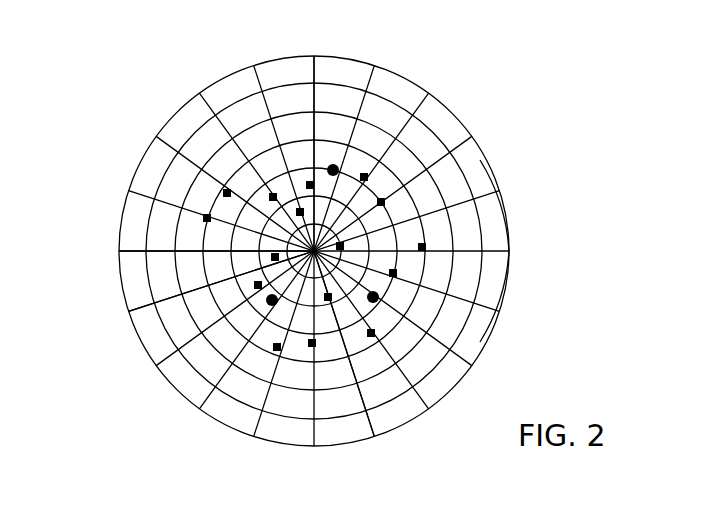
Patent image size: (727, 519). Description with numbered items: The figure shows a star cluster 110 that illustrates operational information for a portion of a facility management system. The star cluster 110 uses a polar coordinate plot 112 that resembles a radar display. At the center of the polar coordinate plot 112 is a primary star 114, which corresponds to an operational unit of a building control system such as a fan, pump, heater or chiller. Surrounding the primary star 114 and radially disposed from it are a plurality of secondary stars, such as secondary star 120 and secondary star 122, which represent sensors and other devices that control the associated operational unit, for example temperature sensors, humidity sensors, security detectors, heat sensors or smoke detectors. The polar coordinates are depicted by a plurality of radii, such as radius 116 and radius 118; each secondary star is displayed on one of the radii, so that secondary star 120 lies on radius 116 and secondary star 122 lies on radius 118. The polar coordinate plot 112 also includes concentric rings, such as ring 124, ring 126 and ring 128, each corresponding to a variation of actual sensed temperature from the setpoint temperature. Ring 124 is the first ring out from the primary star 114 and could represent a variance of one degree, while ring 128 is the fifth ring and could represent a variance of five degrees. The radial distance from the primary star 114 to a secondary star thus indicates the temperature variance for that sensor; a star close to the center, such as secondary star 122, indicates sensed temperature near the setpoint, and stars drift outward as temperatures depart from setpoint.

The star cluster 110 is at (112, 432).
The polar coordinate plot 112 is at (393, 452).
The primary star 114 is at (322, 150).
The radius 116 is at (502, 255).
The radius 118 is at (493, 197).
The secondary star 120 is at (426, 245).
The secondary star 122 is at (325, 247).
The ring 124 is at (245, 267).
The ring 126 is at (268, 247).
The ring 128 is at (357, 385).